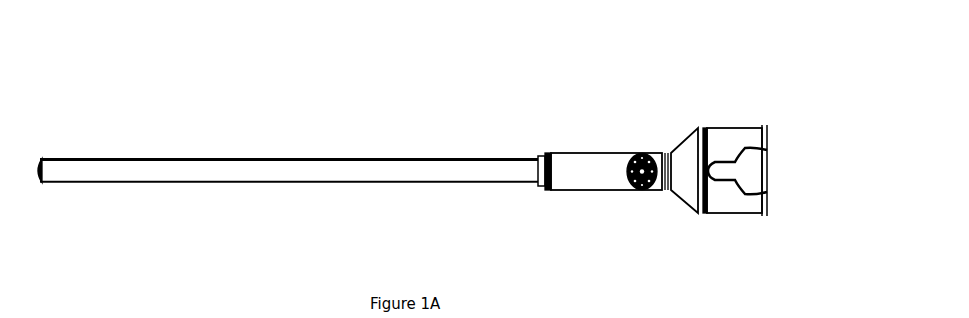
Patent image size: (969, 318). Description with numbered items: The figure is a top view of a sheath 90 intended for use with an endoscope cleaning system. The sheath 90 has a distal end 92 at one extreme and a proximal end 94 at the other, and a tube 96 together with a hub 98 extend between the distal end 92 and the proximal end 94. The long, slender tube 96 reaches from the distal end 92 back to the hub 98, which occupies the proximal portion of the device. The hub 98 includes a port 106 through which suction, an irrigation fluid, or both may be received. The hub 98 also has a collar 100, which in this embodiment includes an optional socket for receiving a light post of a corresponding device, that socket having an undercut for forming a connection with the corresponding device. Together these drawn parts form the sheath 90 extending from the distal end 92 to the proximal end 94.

The sheath 90 is at (449, 77).
The distal end 92 is at (40, 146).
The proximal end 94 is at (767, 95).
The tube 96 is at (155, 158).
The hub 98 is at (765, 218).
The collar 100 is at (687, 140).
The port 106 is at (635, 153).